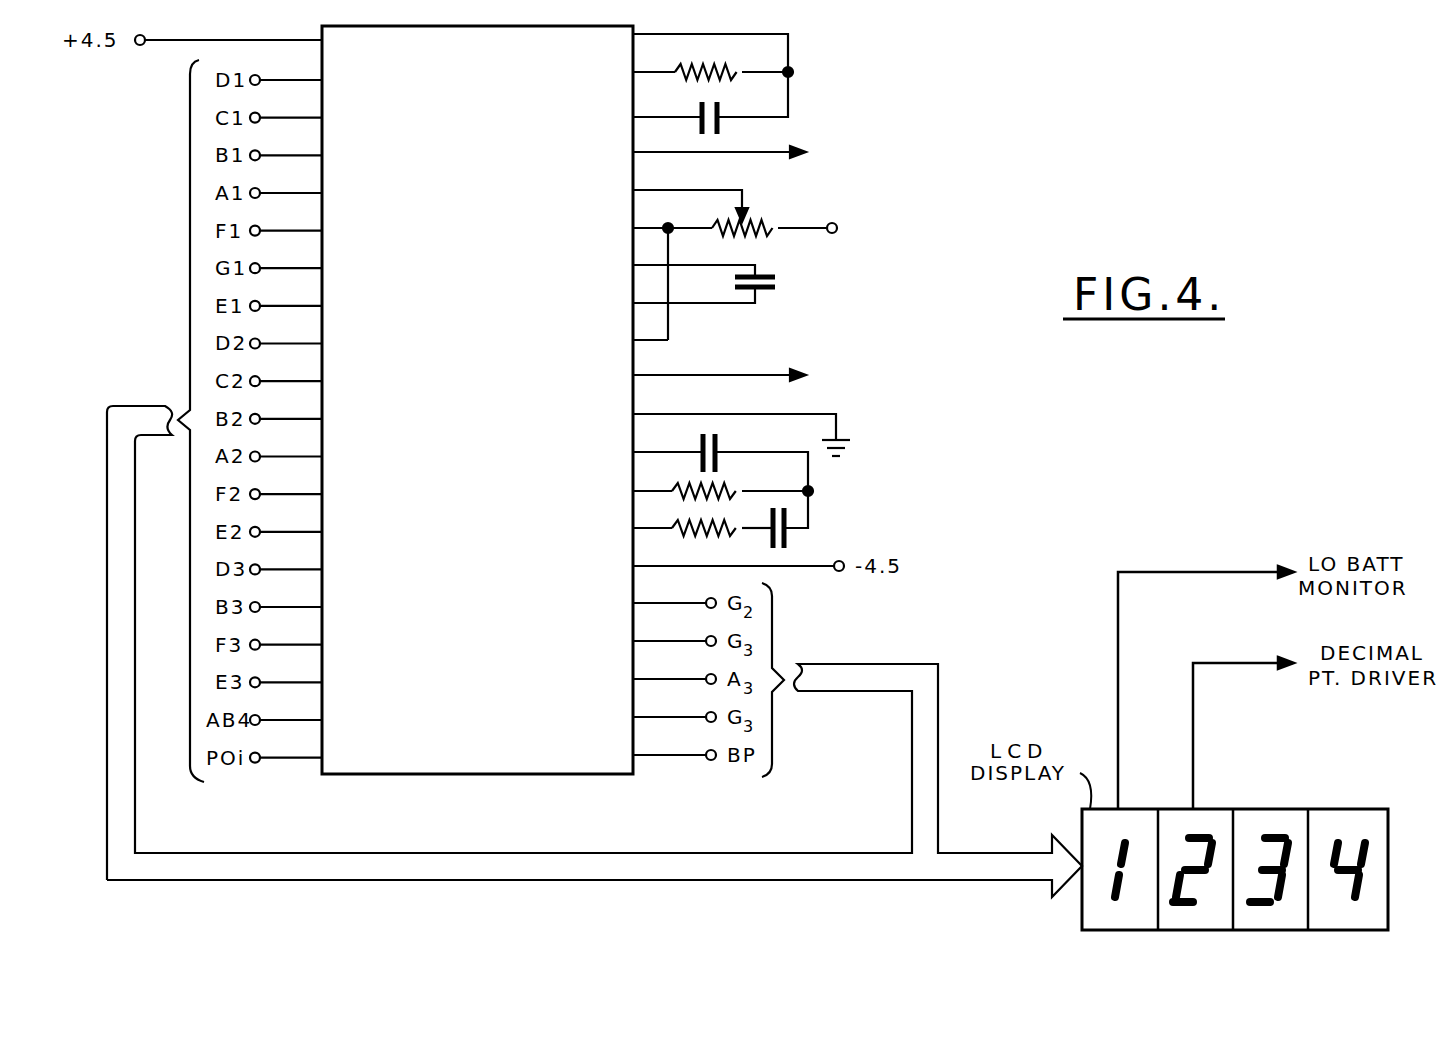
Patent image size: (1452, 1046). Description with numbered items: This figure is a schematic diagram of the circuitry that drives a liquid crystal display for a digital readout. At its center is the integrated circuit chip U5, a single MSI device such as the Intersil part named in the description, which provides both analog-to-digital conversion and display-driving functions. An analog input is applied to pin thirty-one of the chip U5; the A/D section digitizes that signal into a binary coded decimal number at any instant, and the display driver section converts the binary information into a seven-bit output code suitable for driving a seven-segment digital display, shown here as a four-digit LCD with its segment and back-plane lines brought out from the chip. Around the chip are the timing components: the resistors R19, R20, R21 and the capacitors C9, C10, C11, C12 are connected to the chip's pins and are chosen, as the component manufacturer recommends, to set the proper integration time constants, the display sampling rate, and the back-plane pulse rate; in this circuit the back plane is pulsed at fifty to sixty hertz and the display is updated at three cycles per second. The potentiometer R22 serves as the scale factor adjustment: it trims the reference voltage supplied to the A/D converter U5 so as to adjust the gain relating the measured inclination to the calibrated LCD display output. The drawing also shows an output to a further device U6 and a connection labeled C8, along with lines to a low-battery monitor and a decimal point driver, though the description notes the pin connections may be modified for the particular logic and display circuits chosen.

The integrated circuit chip U5 is at (477, 398).
The resistor R19 is at (713, 57).
The capacitor C9 is at (710, 103).
The integrated circuit U6 is at (739, 152).
The potentiometer R22 is at (770, 210).
The capacitor C10 is at (741, 281).
The capacitor C8 is at (741, 375).
The capacitor C11 is at (720, 456).
The resistor R20 is at (723, 480).
The resistor R21 is at (703, 543).
The capacitor C12 is at (814, 526).